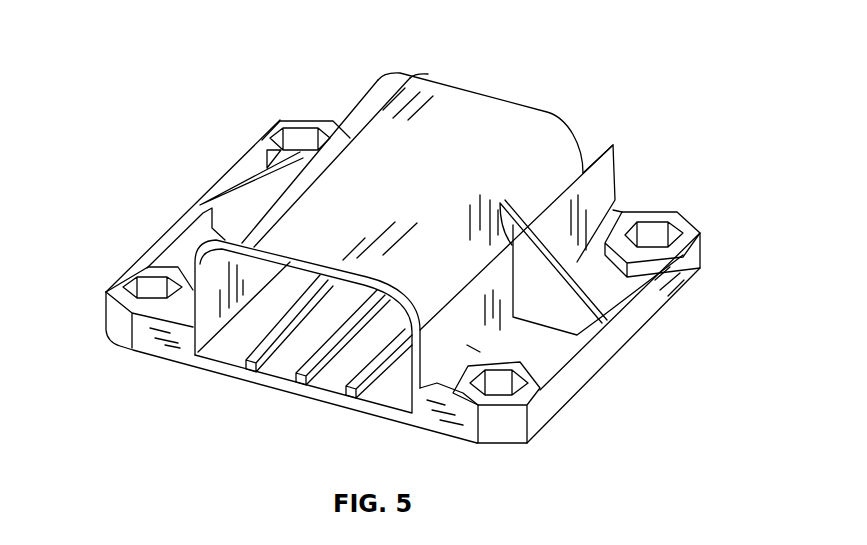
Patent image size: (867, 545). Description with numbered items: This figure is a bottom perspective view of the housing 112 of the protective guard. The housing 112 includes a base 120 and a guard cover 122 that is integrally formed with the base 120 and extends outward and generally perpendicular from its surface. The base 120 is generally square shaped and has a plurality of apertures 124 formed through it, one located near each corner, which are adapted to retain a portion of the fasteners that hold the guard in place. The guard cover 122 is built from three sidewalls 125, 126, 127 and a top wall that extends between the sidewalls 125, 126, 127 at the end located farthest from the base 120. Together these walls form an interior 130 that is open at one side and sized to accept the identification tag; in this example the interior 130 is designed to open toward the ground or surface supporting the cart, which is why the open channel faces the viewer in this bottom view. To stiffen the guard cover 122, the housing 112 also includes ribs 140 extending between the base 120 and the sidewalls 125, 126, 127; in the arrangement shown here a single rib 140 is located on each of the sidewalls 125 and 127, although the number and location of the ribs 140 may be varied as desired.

The housing 112 is at (670, 146).
The base 120 is at (598, 360).
The guard cover 122 is at (356, 221).
The apertures 124 is at (305, 135).
The sidewall 125 is at (200, 257).
The sidewall 126 is at (468, 113).
The sidewall 127 is at (467, 345).
The interior 130 is at (257, 323).
The ribs 140 is at (243, 198).